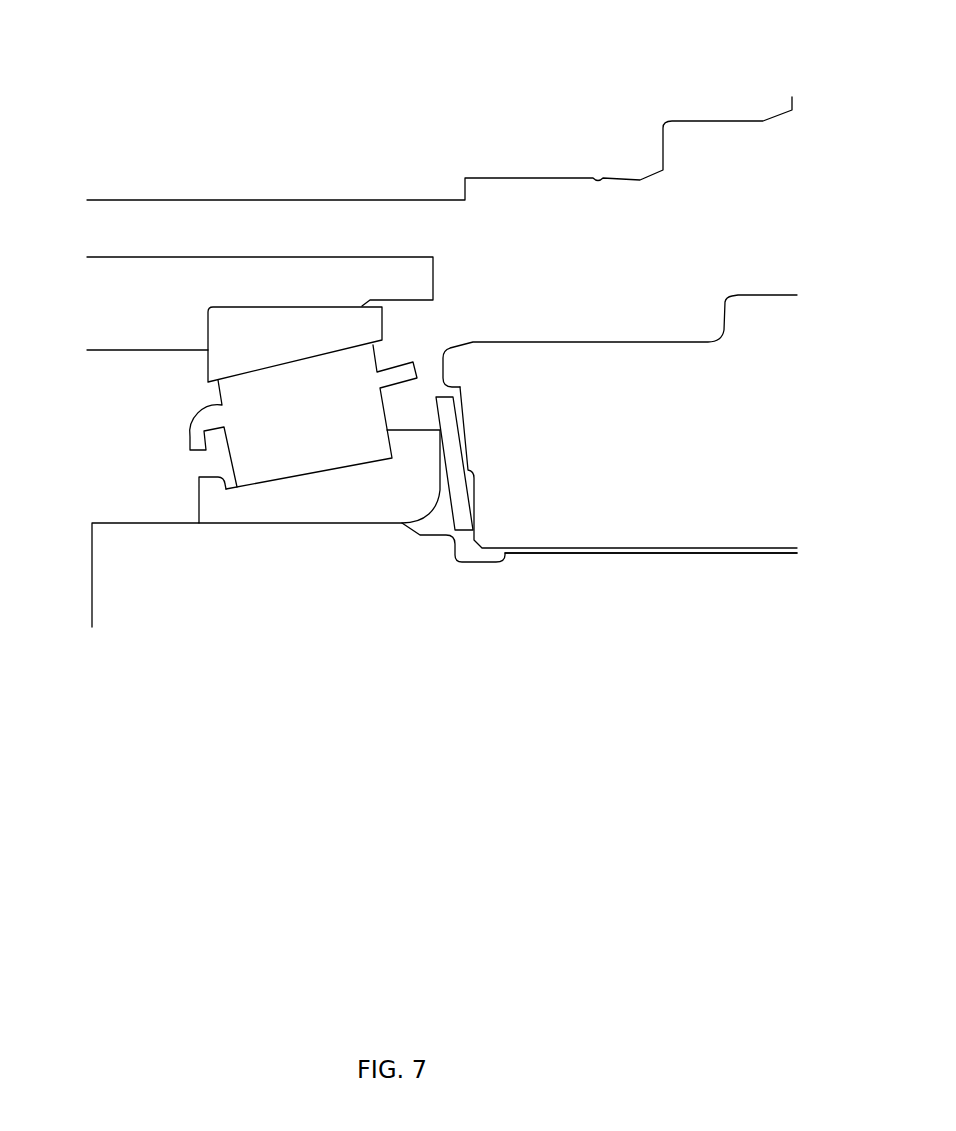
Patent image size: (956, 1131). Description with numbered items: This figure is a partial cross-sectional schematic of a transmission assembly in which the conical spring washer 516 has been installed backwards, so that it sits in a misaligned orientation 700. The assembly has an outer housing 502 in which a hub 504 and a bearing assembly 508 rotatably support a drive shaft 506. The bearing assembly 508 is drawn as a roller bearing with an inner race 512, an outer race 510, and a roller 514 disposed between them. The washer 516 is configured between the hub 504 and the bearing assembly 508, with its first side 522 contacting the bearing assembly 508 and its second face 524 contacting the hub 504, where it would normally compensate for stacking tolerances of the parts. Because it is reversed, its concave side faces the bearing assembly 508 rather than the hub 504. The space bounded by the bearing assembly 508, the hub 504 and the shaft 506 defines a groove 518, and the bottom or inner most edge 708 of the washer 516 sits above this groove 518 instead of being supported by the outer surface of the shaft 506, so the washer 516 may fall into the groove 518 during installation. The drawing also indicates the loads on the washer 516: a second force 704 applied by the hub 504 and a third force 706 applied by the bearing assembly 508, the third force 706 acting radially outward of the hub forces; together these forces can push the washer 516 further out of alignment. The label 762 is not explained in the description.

The misaligned orientation 700 is at (170, 105).
The outer housing 502 is at (308, 290).
The hub 504 is at (767, 512).
The drive shaft 506 is at (692, 555).
The bearing assembly 508 is at (158, 440).
The outer race 510 is at (228, 338).
The inner race 512 is at (277, 512).
The roller 514 is at (250, 458).
The conical spring washer 516 is at (449, 441).
The groove 518 is at (512, 544).
The first side 522 is at (440, 509).
The second face 524 is at (476, 398).
The second force 704 is at (488, 519).
The third force 706 is at (428, 425).
The inner most edge 708 is at (469, 562).
The plate face 762 is at (482, 465).